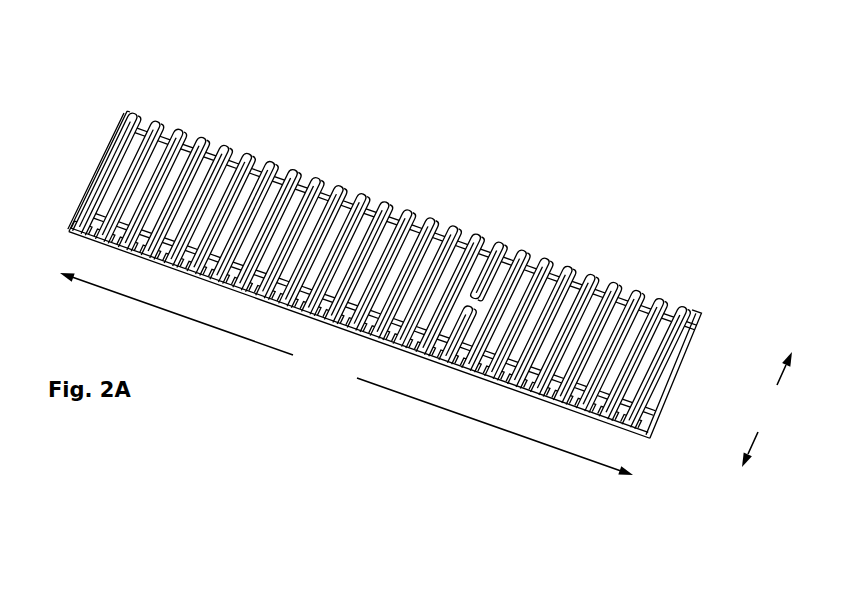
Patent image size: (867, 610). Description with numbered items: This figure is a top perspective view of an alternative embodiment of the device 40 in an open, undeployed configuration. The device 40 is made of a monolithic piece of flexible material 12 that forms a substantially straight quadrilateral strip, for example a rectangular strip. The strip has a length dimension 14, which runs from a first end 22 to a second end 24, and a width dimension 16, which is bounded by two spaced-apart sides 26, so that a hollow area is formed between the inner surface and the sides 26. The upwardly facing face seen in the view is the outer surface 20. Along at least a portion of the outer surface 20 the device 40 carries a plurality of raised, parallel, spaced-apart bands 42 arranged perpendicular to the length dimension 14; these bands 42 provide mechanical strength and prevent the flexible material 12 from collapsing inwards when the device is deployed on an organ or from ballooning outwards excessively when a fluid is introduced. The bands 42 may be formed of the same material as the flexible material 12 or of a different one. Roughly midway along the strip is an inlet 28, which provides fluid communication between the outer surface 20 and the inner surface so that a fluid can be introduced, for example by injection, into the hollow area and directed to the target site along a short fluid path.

The flexible material 12 is at (629, 248).
The device 40 is at (629, 70).
The outer surface 20 is at (153, 157).
The raised, parallel, spaced-apart bands 42 is at (240, 160).
The inlet 28 is at (481, 300).
The first end 22 is at (93, 172).
The second end 24 is at (682, 377).
The length dimension 14 is at (346, 374).
The width dimension 16 is at (767, 409).
The spaced-apart sides 26 is at (112, 607).